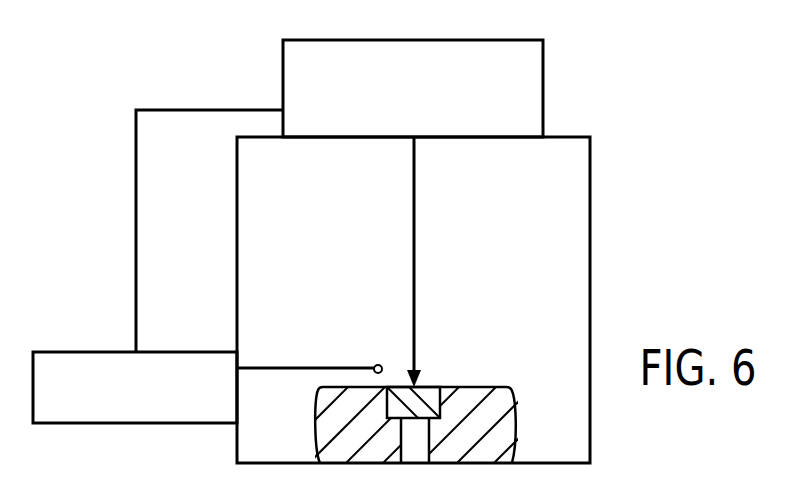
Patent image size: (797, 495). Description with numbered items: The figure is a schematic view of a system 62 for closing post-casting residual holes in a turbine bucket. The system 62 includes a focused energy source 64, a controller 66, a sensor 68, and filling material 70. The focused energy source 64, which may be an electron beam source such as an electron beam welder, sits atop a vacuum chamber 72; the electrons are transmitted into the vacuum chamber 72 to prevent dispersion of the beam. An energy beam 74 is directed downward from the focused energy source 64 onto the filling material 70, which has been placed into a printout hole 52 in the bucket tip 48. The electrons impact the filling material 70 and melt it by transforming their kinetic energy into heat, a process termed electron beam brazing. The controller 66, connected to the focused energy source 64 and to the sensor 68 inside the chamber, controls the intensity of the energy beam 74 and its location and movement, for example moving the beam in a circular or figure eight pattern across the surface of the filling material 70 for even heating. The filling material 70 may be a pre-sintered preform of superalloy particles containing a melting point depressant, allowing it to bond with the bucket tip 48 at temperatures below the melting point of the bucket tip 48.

The system 62 is at (627, 47).
The focused energy source 64 is at (283, 76).
The controller 66 is at (85, 352).
The sensor 68 is at (374, 366).
The filling material 70 is at (424, 387).
The vacuum chamber 72 is at (506, 188).
The energy beam 74 is at (414, 254).
The bucket tip 48 is at (313, 447).
The printout hole 52 is at (442, 399).